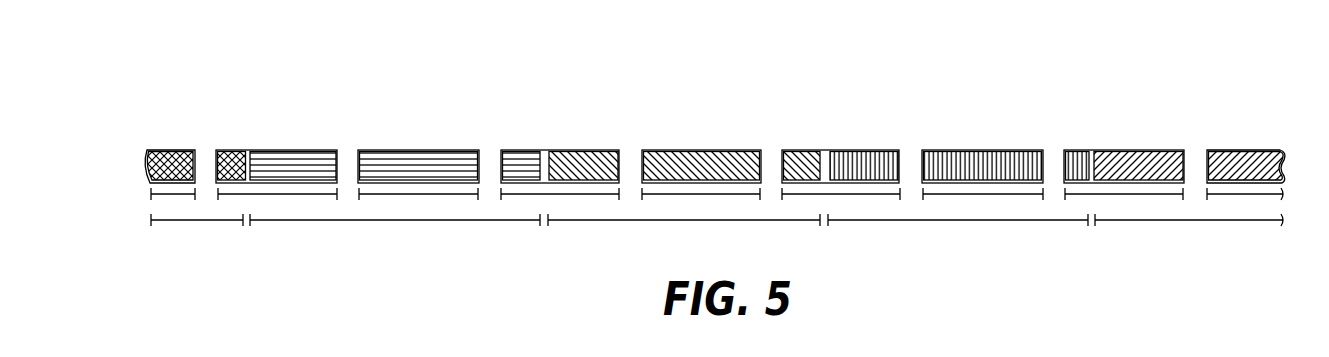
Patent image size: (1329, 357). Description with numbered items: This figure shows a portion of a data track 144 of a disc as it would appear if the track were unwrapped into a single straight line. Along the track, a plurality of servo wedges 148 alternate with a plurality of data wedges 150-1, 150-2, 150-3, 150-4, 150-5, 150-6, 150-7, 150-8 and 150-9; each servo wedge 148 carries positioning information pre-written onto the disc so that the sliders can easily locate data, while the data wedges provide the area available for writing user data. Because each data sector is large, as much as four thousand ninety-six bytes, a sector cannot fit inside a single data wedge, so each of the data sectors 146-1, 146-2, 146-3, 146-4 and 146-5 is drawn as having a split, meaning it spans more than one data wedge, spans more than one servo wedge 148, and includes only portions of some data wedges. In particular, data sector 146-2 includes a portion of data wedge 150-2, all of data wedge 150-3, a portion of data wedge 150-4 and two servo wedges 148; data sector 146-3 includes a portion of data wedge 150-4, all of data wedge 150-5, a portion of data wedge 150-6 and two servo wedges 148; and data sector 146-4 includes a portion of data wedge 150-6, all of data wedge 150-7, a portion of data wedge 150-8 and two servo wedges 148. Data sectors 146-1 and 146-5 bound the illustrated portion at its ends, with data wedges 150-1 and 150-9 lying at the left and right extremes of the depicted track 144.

The data track 144 is at (262, 95).
The data sector 146-1 is at (178, 220).
The data sector 146-2 is at (392, 220).
The data sector 146-3 is at (662, 220).
The data sector 146-4 is at (965, 220).
The data sector 146-5 is at (1200, 220).
The servo wedge 148 is at (206, 148).
The data wedge 150-1 is at (170, 194).
The data wedge 150-2 is at (276, 194).
The data wedge 150-3 is at (418, 194).
The data wedge 150-4 is at (556, 194).
The data wedge 150-5 is at (698, 194).
The data wedge 150-6 is at (838, 194).
The data wedge 150-7 is at (982, 194).
The data wedge 150-8 is at (1118, 194).
The data wedge 150-9 is at (1242, 194).